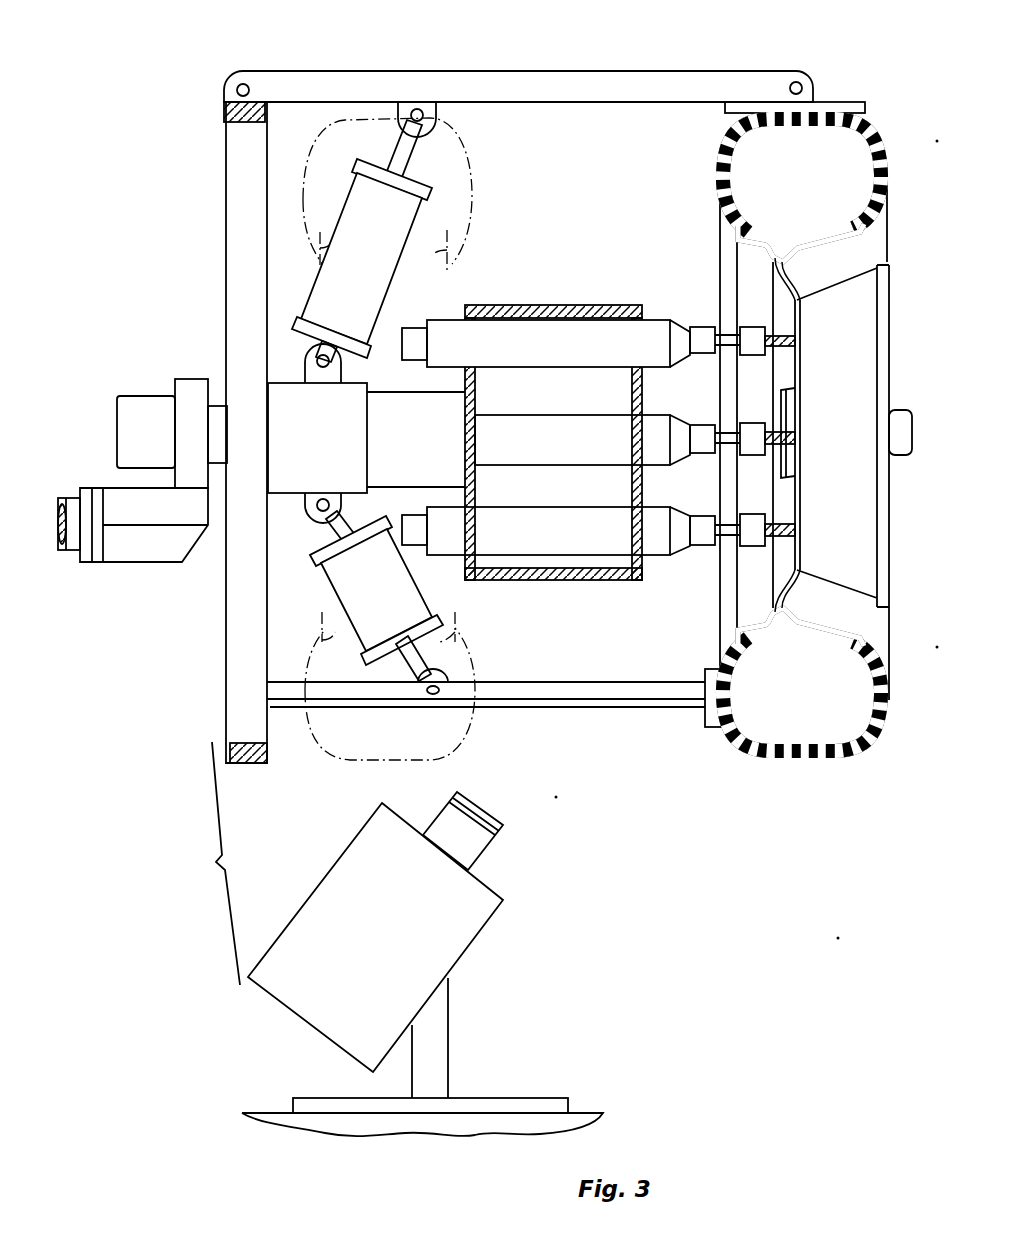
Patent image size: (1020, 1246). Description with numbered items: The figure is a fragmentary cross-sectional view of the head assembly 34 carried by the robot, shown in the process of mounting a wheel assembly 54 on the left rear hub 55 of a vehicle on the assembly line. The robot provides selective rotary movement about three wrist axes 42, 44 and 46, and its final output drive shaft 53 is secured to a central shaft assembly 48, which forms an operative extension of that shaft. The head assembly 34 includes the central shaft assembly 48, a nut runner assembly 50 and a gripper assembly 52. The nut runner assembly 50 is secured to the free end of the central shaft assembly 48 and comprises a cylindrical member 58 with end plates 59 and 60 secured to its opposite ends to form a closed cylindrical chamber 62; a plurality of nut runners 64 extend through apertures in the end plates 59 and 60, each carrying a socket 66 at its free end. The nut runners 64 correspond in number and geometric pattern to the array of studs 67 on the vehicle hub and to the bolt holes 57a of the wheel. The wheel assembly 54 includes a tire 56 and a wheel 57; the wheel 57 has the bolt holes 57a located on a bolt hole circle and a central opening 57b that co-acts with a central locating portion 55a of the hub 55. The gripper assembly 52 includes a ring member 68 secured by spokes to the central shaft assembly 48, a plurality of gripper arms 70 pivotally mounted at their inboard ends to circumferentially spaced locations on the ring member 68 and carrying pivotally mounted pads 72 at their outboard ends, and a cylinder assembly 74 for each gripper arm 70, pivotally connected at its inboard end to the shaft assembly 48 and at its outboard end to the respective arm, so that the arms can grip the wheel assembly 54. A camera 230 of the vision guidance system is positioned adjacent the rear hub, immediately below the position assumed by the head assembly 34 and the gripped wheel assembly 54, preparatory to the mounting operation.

The head assembly 34 is at (565, 42).
The wrist axis 42 is at (60, 490).
The wrist axis 44 is at (177, 584).
The wrist axis 46 is at (97, 404).
The central shaft assembly 48 is at (297, 482).
The nut runner assembly 50 is at (601, 290).
The gripper assembly 52 is at (412, 66).
The final output drive shaft 53 is at (216, 400).
The wheel assembly 54 is at (792, 765).
The left rear hub 55 is at (838, 313).
The central locating portion 55a is at (790, 425).
The tire 56 is at (735, 741).
The wheel 57 is at (776, 603).
The bolt holes 57a is at (800, 523).
The central opening 57b is at (797, 479).
The cylindrical member 58 is at (500, 308).
The end plate 59 is at (640, 377).
The end plate 60 is at (468, 569).
The closed cylindrical chamber 62 is at (500, 387).
The nut runners 64 is at (558, 335).
The socket 66 is at (752, 334).
The studs 67 is at (786, 538).
The ring member 68 is at (222, 128).
The gripper arms 70 is at (232, 236).
The pads 72 is at (730, 108).
The cylinder assembly 74 is at (378, 286).
The camera 230 is at (328, 888).